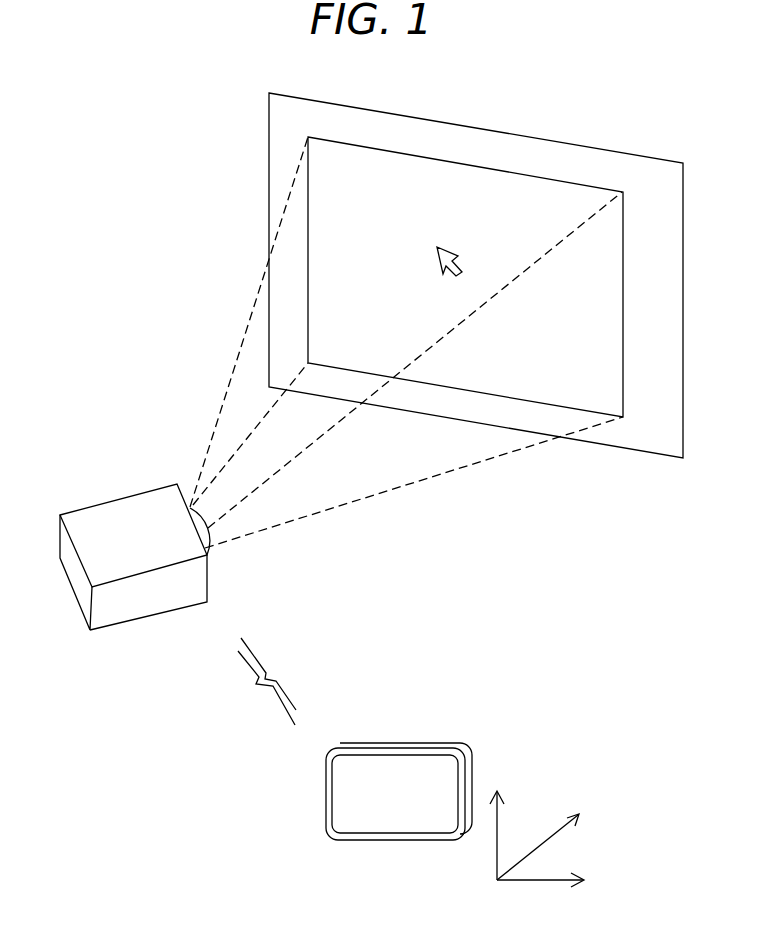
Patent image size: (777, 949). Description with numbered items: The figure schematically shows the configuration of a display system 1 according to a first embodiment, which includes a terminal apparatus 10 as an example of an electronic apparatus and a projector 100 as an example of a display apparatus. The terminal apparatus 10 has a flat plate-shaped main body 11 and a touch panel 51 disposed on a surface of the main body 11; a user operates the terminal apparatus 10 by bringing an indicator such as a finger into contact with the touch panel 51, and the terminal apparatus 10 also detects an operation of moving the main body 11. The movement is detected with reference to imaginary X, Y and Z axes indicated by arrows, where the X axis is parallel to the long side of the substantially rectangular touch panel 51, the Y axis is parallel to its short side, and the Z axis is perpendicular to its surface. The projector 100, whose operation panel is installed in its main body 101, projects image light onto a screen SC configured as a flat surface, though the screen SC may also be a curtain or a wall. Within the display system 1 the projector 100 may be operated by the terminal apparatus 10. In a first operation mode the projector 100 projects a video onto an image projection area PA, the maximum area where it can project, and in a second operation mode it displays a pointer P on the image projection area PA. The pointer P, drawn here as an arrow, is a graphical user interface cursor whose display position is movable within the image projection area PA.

The display system 1 is at (177, 209).
The projector 100 is at (135, 550).
The main body 101 is at (110, 617).
The terminal apparatus 10 is at (371, 760).
The main body 11 is at (326, 802).
The touch panel 51 is at (397, 768).
The screen SC is at (468, 125).
The image projection area PA is at (377, 147).
The pointer P is at (463, 253).